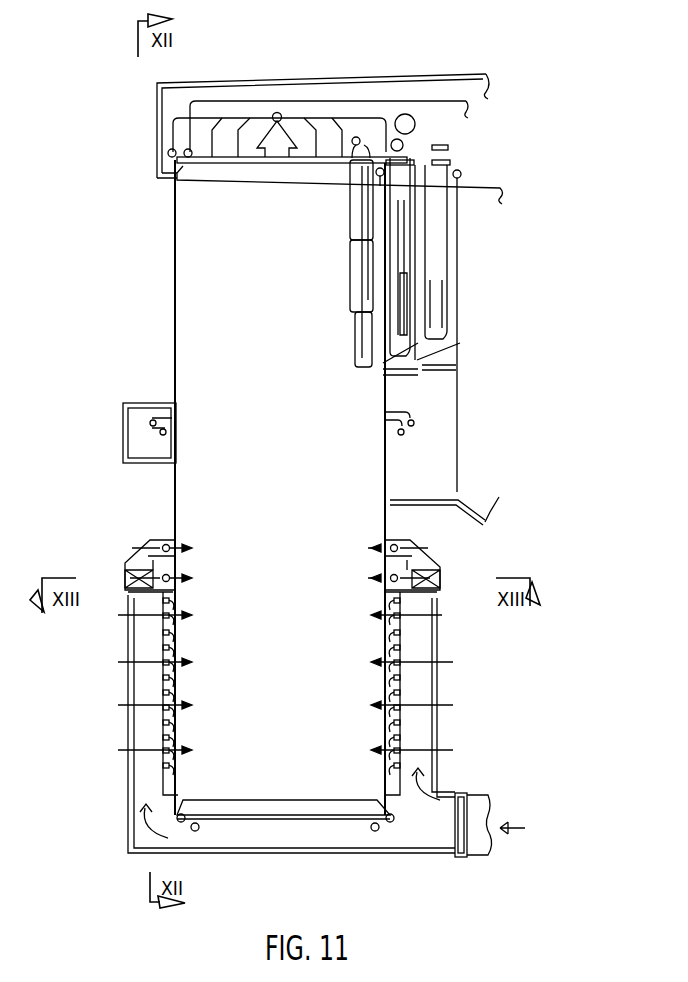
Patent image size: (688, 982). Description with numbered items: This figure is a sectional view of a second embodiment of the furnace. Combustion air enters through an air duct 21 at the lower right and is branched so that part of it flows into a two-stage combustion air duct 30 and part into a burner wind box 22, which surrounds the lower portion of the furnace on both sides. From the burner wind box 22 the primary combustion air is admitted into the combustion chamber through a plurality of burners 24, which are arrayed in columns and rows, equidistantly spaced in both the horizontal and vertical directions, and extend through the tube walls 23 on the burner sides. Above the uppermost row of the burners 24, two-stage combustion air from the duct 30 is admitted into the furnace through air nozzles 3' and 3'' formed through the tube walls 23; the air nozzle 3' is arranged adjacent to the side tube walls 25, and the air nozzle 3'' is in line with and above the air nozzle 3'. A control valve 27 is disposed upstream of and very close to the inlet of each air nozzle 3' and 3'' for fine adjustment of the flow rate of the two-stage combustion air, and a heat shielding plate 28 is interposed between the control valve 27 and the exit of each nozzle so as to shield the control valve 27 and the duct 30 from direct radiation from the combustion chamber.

The air duct 21 is at (474, 808).
The burner wind box 22 is at (140, 636).
The tube walls 23 is at (178, 518).
The burners 24 is at (185, 660).
The side tube walls 25 is at (310, 455).
The control valve 27 is at (125, 585).
The heat shielding plate 28 is at (150, 556).
The two-stage combustion air duct 30 is at (160, 540).
The air nozzle 3' is at (275, 584).
The air nozzle 3'' is at (275, 536).